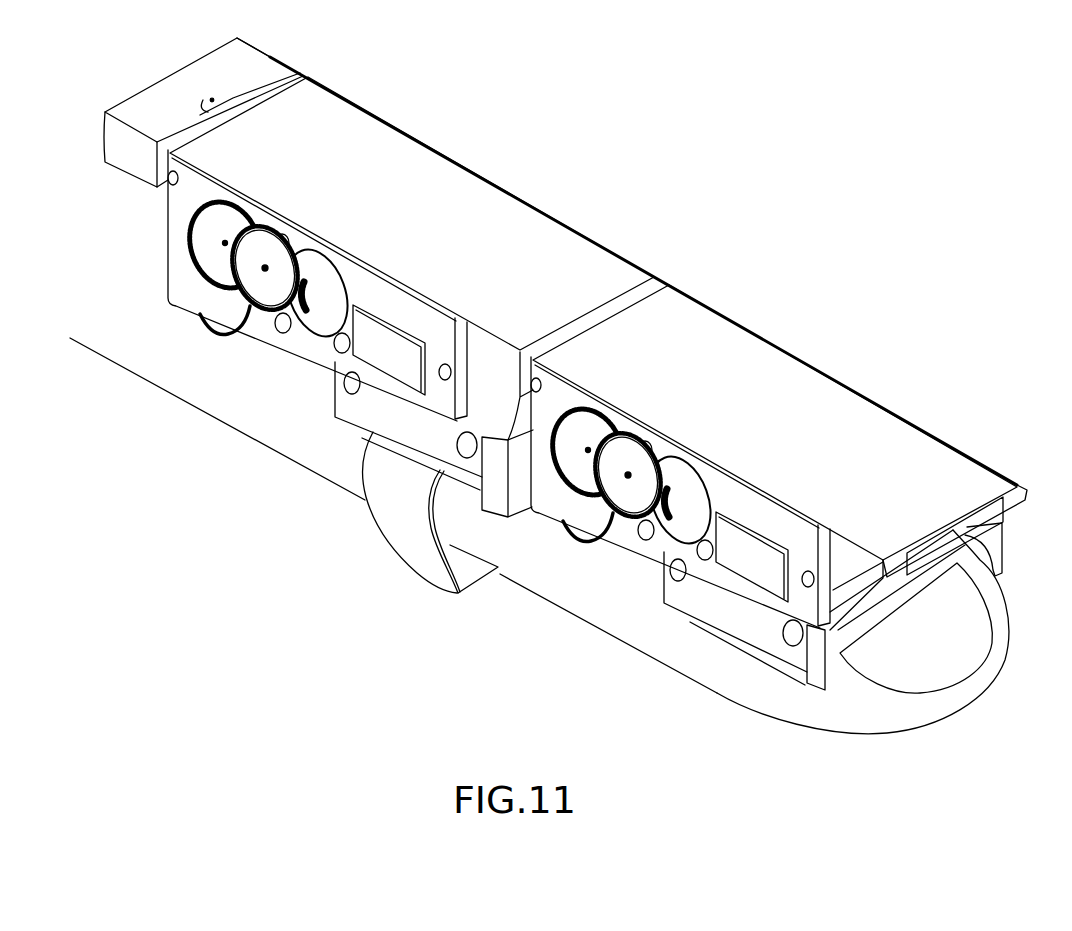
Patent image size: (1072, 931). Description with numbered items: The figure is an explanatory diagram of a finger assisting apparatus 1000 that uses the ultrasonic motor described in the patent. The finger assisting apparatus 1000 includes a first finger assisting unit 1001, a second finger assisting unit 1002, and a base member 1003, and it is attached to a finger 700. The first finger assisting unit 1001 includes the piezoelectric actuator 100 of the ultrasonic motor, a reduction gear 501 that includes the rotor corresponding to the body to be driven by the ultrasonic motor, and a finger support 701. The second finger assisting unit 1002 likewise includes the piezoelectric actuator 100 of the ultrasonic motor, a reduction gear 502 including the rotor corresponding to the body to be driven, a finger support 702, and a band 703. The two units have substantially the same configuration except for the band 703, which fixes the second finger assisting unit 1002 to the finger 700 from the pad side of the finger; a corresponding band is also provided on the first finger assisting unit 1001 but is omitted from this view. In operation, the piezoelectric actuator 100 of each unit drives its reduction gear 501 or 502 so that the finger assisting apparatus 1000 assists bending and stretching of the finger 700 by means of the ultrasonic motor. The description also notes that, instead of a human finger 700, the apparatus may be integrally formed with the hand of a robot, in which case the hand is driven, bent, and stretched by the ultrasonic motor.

The finger assisting apparatus 1000 is at (903, 177).
The first finger assisting unit 1001 is at (1040, 480).
The second finger assisting unit 1002 is at (350, 40).
The base member 1003 is at (133, 104).
The finger support 702 is at (313, 100).
The finger support 701 is at (1020, 500).
The band 703 is at (402, 553).
The finger 700 is at (940, 710).
The reduction gear 502 is at (227, 170).
The reduction gear 501 is at (590, 378).
The piezoelectric actuator 100 is at (390, 317).